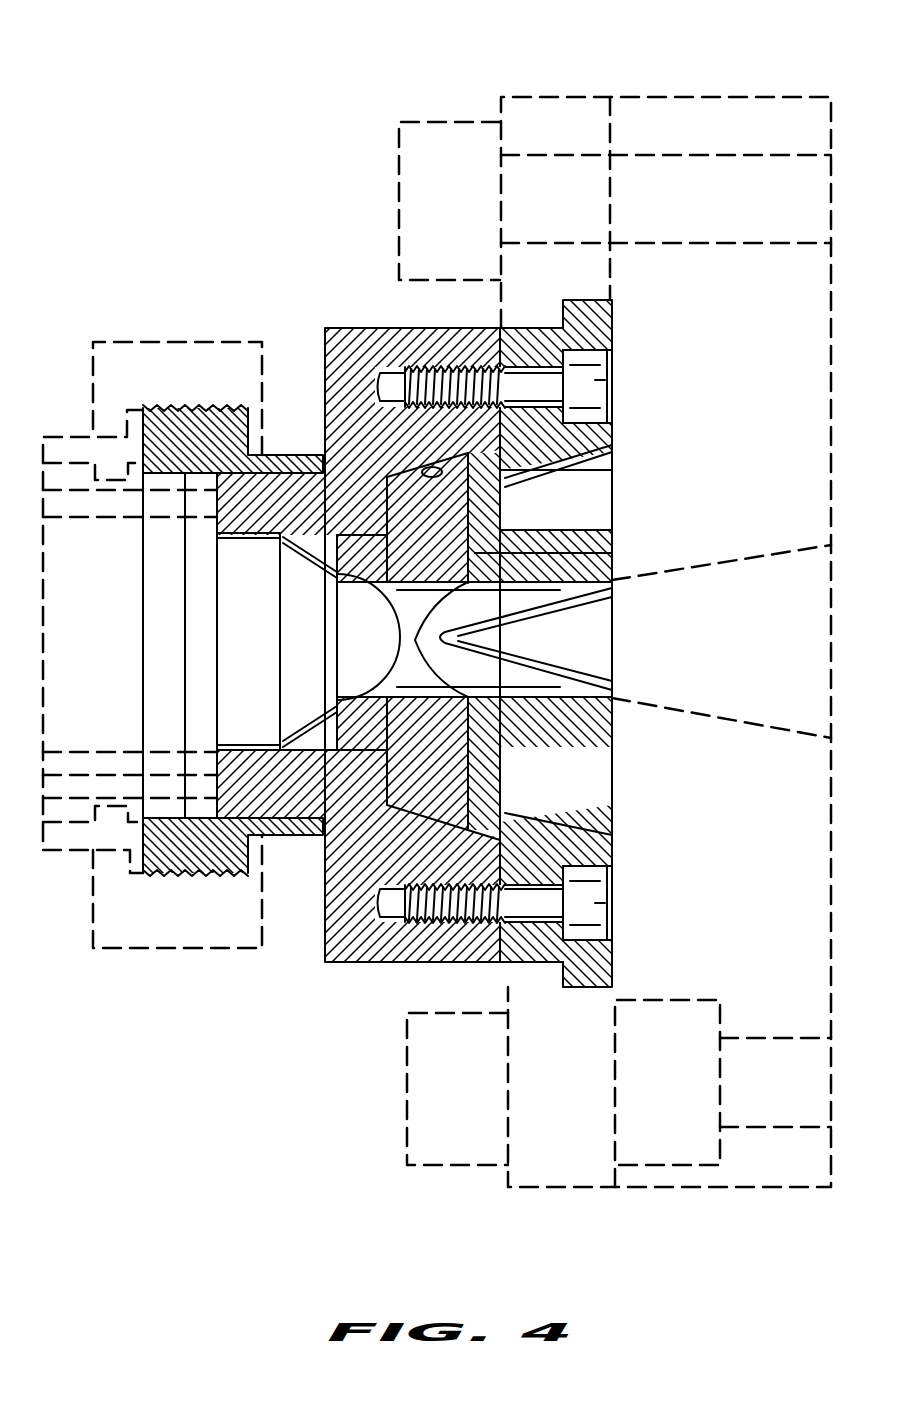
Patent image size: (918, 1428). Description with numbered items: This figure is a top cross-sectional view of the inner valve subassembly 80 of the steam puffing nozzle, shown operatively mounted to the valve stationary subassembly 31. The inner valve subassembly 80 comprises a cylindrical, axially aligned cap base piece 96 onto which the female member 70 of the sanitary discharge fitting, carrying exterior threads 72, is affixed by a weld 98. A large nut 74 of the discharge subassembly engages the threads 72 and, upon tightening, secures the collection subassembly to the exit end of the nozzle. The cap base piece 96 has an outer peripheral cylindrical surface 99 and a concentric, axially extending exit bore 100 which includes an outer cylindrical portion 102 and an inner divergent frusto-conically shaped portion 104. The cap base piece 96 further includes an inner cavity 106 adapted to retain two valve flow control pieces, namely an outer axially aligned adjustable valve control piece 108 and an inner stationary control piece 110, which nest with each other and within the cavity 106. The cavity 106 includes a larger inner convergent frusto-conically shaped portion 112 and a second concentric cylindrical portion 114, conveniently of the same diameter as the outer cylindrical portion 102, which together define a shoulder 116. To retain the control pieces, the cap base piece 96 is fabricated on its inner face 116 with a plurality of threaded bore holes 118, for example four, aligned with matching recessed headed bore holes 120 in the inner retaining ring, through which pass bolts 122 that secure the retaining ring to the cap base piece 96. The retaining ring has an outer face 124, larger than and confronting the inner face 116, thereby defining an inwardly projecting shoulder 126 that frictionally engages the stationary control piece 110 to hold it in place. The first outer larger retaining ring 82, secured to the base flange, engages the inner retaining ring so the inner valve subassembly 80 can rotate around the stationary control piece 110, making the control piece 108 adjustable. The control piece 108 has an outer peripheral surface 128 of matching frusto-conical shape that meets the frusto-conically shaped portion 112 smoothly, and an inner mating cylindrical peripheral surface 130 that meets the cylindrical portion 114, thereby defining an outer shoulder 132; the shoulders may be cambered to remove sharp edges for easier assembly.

The valve stationary subassembly 31 is at (748, 92).
The female member 70 is at (175, 425).
The exterior threads 72 is at (215, 405).
The large nut 74 is at (98, 340).
The inner valve subassembly 80 is at (355, 318).
The first outer larger retaining ring 82 is at (590, 95).
The cap base piece 96 is at (355, 930).
The weld 98 is at (316, 450).
The outer peripheral cylindrical surface 99 is at (288, 838).
The exit bore 100 is at (283, 530).
The outer cylindrical portion 102 is at (283, 540).
The inner divergent frusto-conically shaped portion 104 is at (305, 745).
The inner cavity 106 is at (348, 612).
The adjustable valve control piece 108 is at (450, 502).
The stationary control piece 110 is at (600, 562).
The convergent frusto-conically shaped portion 112 is at (520, 478).
The cylindrical portion 114 is at (440, 705).
The shoulder 116 is at (512, 350).
The threaded bore holes 118 is at (437, 368).
The recessed headed bore holes 120 is at (540, 345).
The bolts 122 is at (603, 385).
The outer face 124 is at (530, 440).
The inwardly projecting shoulder 126 is at (528, 472).
The outer peripheral surface 128 is at (437, 467).
The inner mating cylindrical peripheral surface 130 is at (272, 562).
The outer shoulder 132 is at (332, 572).